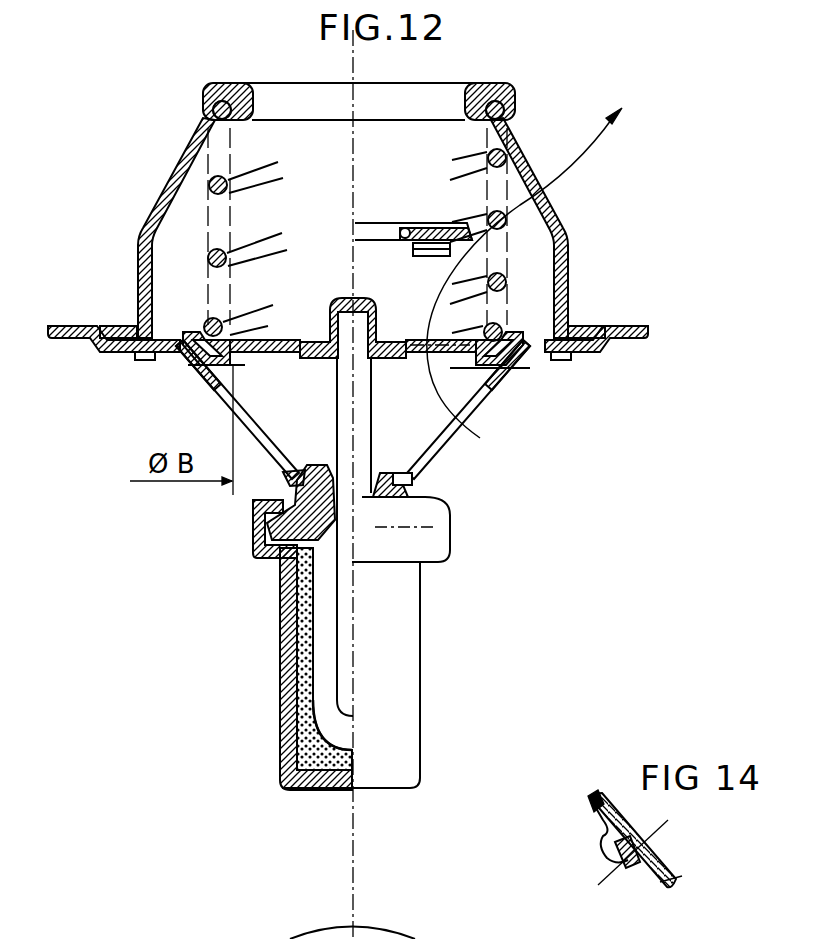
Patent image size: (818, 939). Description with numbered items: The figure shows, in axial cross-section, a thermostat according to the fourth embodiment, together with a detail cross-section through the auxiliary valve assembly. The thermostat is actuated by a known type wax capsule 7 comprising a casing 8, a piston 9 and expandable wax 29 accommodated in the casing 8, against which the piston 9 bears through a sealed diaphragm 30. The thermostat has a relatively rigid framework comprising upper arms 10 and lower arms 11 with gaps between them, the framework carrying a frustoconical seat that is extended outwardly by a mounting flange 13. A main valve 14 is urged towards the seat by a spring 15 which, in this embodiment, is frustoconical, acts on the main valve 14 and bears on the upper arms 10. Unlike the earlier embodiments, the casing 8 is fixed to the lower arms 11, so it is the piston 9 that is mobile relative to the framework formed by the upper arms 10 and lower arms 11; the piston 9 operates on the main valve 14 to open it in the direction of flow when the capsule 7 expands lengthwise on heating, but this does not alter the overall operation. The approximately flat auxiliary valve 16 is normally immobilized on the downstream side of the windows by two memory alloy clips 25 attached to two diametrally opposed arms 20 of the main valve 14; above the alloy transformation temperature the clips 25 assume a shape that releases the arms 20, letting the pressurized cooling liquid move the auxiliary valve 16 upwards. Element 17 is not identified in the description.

In FIG. 12, the wax capsule 7 is at (424, 743).
In FIG. 12, the casing 8 is at (401, 702).
In FIG. 12, the piston 9 is at (372, 422).
In FIG. 12, the upper arms 10 is at (158, 206).
In FIG. 12, the lower arms 11 is at (462, 402).
In FIG. 12, the mounting flange 13 is at (68, 325).
In FIG. 12, the main valve 14 is at (190, 330).
In FIG. 12, the spring 15 is at (212, 180).
In FIG. 12, the auxiliary valve 16 is at (400, 242).
In FIG. 14, the auxiliary valve 16 is at (666, 860).
In FIG. 12, the container 17 is at (425, 938).
In FIG. 14, the arms 20 is at (633, 870).
In FIG. 14, the memory alloy clips 25 is at (604, 838).
In FIG. 12, the wax 29 is at (306, 735).
In FIG. 12, the diaphragm 30 is at (320, 672).